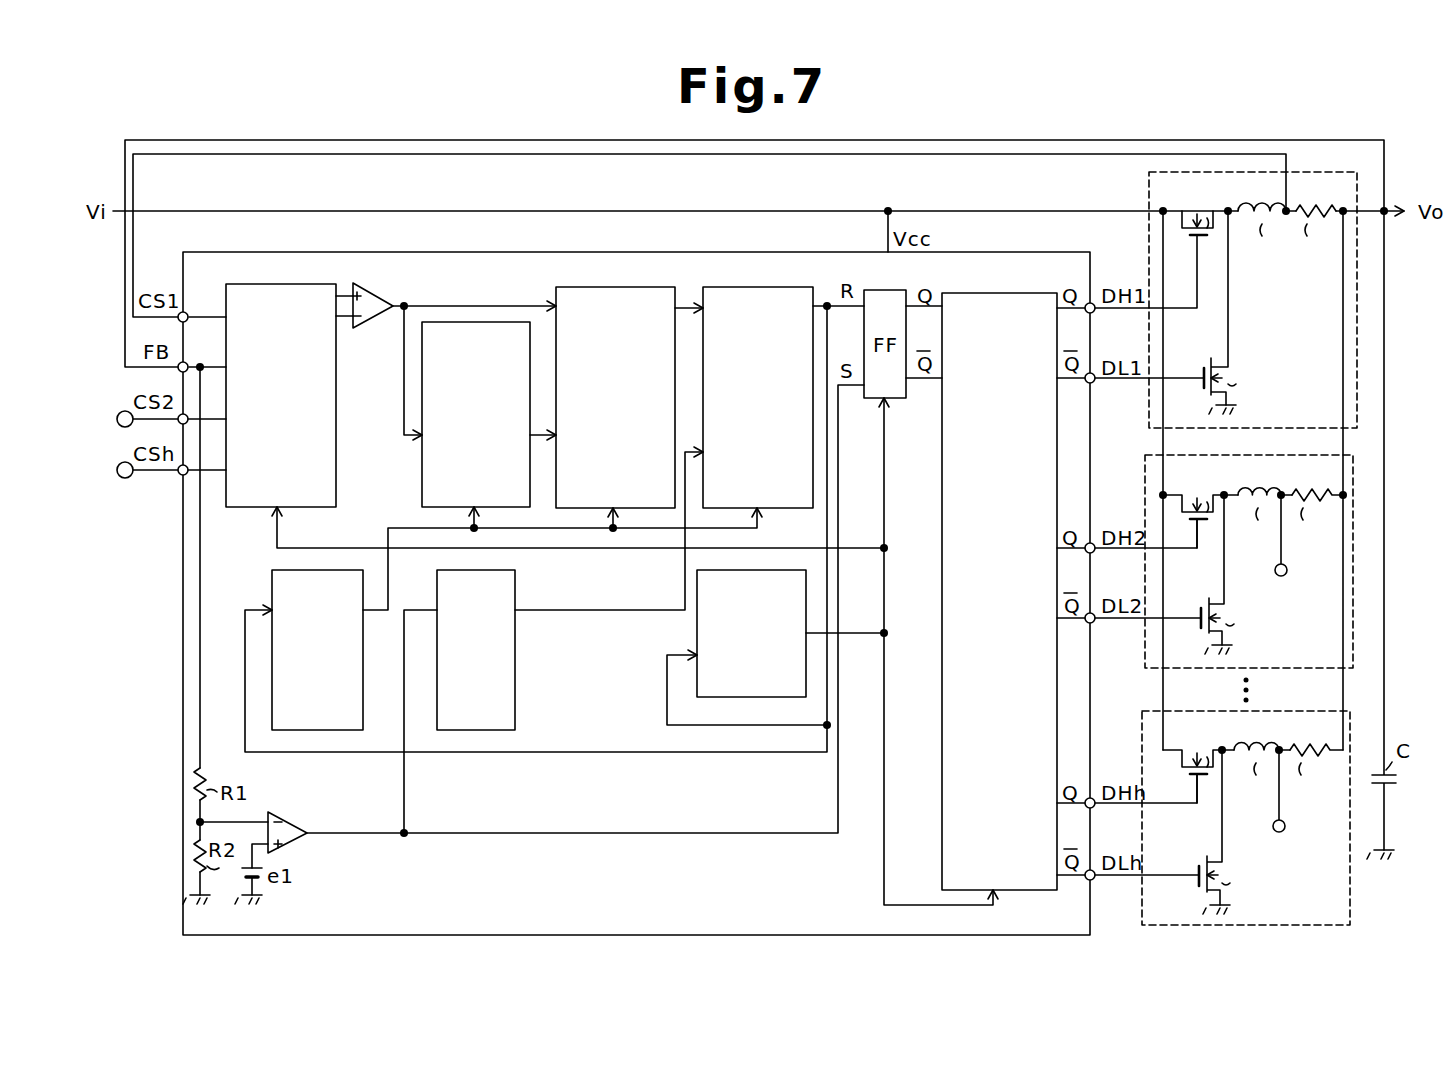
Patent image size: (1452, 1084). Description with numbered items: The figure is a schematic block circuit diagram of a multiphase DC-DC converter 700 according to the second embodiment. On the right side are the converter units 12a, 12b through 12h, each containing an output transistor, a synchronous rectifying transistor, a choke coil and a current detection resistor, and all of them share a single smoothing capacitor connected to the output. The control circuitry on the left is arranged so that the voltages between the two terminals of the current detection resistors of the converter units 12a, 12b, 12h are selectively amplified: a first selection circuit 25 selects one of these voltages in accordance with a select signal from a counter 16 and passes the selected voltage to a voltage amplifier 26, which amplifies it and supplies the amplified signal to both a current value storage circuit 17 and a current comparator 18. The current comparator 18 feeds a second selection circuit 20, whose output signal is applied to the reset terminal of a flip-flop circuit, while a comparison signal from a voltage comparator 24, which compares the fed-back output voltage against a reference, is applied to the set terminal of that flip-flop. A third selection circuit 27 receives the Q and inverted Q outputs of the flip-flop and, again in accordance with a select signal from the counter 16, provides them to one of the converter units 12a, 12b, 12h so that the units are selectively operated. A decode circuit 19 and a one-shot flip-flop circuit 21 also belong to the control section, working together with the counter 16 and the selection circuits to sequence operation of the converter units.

The multiphase DC-DC converter 700 is at (1396, 141).
The first selection circuit 25 is at (276, 284).
The voltage amplifier 26 is at (394, 278).
The current value storage circuit 17 is at (486, 322).
The current comparator 18 is at (606, 287).
The second selection circuit 20 is at (752, 287).
The third selection circuit 27 is at (992, 293).
The decode circuit 19 is at (272, 570).
The one-shot flip-flop circuit 21 is at (515, 576).
The counter 16 is at (694, 634).
The voltage comparator 24 is at (294, 800).
The converter unit 12a is at (1357, 368).
The converter unit 12b is at (1353, 615).
The converter unit 12h is at (1350, 880).